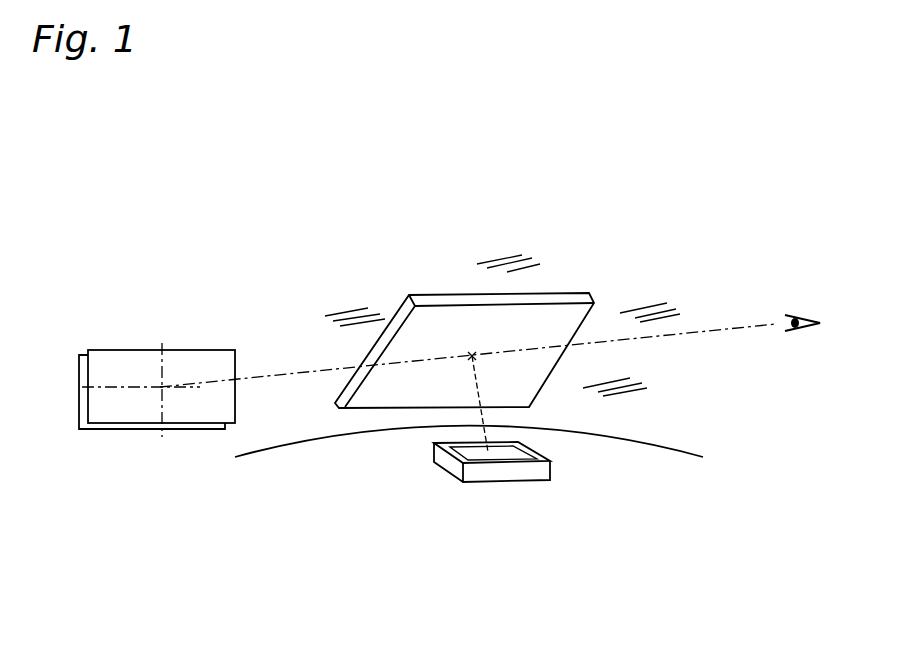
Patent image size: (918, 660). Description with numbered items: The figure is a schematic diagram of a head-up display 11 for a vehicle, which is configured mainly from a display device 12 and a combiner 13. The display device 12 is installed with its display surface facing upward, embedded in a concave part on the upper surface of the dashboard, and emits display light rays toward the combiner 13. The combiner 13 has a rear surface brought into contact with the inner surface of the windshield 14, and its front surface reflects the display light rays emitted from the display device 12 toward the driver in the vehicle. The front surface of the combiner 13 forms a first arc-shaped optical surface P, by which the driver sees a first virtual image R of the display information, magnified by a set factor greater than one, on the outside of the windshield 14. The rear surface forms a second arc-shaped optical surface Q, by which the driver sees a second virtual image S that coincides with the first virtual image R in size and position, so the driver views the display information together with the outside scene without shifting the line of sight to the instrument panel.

The head-up display 11 is at (500, 266).
The display device 12 is at (507, 484).
The combiner 13 is at (457, 293).
The windshield 14 is at (623, 302).
The second virtual image S is at (79, 370).
The first virtual image R is at (186, 350).
The first arc-shaped optical surface P is at (413, 328).
The second arc-shaped optical surface Q is at (405, 312).